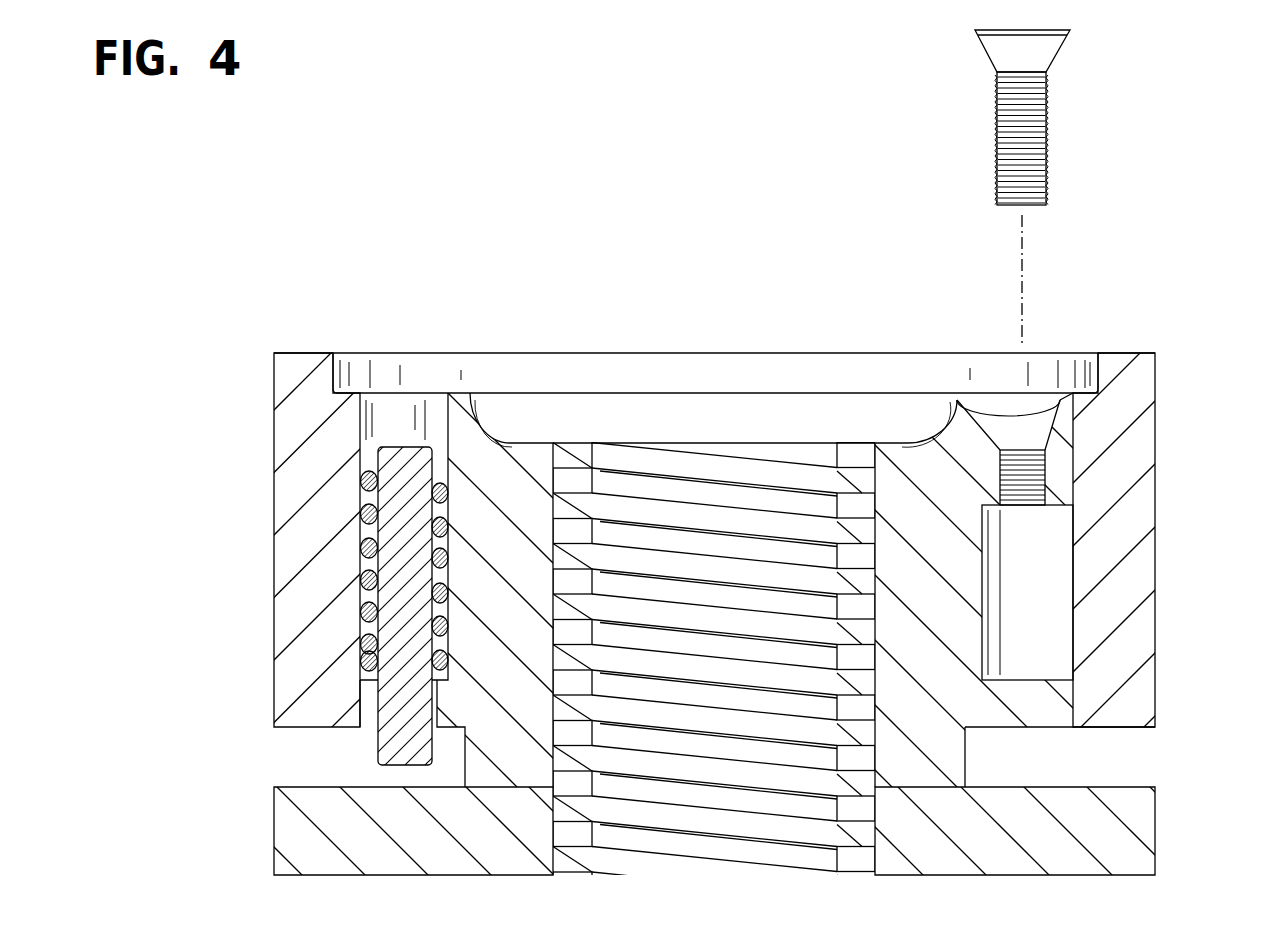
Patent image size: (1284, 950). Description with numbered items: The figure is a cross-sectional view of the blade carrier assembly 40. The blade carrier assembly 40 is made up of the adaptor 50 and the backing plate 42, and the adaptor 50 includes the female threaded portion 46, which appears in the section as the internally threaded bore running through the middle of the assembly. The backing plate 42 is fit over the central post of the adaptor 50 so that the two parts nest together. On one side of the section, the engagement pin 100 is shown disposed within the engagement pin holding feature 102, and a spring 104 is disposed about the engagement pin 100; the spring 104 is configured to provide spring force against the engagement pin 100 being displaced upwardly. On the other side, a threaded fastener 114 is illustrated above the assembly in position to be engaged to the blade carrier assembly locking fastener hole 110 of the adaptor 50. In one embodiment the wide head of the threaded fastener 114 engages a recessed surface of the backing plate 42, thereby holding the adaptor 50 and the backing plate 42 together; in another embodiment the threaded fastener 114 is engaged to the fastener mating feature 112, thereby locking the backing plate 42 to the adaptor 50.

The blade carrier assembly 40 is at (272, 366).
The backing plate 42 is at (1158, 508).
The female threaded portion 46 is at (595, 815).
The adaptor 50 is at (1158, 828).
The engagement pin 100 is at (380, 740).
The engagement pin holding feature 102 is at (393, 393).
The spring 104 is at (375, 552).
The blade carrier assembly locking fastener hole 110 is at (1032, 450).
The fastener mating feature 112 is at (1075, 580).
The threaded fastener 114 is at (1048, 135).